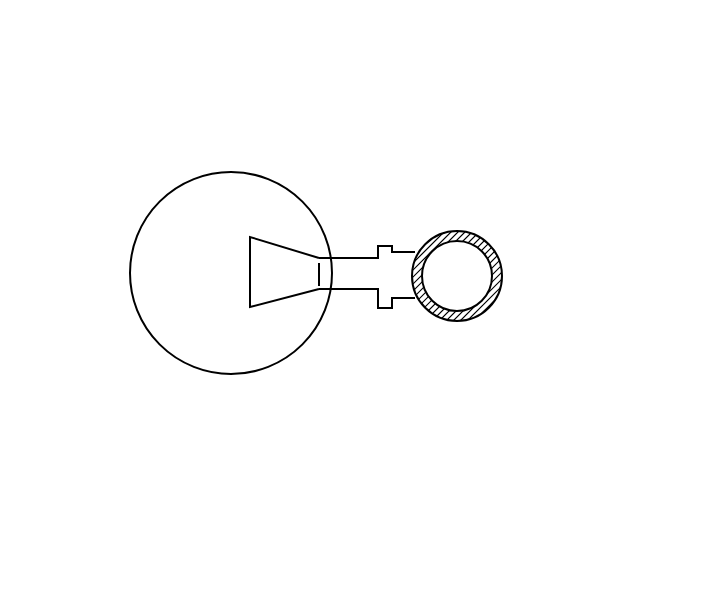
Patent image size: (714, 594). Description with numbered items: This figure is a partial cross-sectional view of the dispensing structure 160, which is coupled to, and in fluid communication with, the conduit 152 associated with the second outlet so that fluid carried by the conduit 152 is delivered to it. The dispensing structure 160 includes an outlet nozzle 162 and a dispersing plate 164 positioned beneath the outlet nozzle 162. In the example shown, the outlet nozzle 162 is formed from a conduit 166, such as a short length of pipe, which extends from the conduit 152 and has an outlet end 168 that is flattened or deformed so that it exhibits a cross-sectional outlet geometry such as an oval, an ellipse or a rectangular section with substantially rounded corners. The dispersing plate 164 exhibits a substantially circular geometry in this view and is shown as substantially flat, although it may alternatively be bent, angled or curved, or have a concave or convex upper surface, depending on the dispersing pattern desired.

The dispensing structure 160 is at (386, 132).
The outlet nozzle 162 is at (243, 217).
The dispersing plate 164 is at (165, 350).
The conduit 166 is at (352, 258).
The outlet end 168 is at (249, 255).
The conduit 152 is at (480, 233).